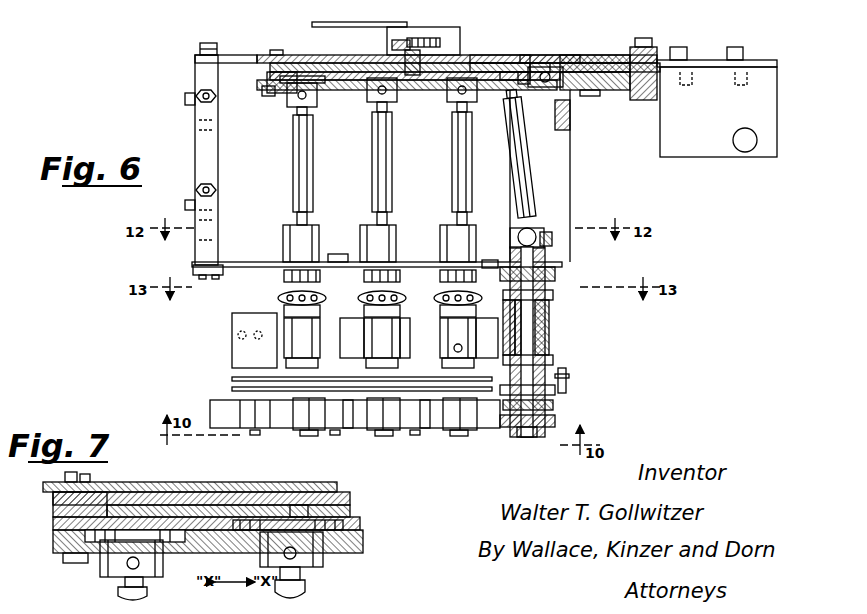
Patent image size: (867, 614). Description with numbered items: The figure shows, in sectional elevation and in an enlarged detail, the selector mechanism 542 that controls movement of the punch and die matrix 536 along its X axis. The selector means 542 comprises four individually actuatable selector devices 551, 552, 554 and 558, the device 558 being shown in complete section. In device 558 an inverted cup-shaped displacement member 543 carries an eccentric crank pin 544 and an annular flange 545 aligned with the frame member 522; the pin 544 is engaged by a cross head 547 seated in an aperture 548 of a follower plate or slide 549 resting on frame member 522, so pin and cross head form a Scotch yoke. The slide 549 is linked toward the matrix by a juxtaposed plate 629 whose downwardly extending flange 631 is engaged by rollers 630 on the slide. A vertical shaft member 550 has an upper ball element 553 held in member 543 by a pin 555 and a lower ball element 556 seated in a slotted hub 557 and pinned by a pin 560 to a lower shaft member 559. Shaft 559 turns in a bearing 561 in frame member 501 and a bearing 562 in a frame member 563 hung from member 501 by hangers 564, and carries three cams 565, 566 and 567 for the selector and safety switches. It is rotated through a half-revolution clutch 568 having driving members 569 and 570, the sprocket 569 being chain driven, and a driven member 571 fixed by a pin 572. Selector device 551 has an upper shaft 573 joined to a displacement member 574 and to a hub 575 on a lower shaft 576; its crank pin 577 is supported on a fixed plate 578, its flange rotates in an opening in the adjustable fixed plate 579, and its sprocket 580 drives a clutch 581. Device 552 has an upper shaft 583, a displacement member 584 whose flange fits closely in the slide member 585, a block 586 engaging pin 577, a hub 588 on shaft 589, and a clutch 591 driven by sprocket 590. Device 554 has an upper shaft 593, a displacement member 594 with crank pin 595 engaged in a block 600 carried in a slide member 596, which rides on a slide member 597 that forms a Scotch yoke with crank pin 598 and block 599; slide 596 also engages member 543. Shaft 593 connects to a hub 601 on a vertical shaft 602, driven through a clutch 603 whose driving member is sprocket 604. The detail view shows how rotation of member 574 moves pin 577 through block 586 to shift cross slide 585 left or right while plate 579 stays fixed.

In FIG. 6, the frame member 501 is at (268, 266).
In FIG. 6, the frame member 522 is at (240, 40).
In FIG. 6, the matrix 536 is at (145, 2).
In FIG. 6, the selector mechanism 542 is at (185, 88).
In FIG. 6, the displacement member 543 is at (538, 64).
In FIG. 6, the eccentric crank pin 544 is at (575, 66).
In FIG. 6, the annular flange 545 is at (526, 57).
In FIG. 6, the cross head 547 is at (565, 57).
In FIG. 6, the aperture 548 is at (578, 76).
In FIG. 6, the follower plate or slide 549 is at (625, 55).
In FIG. 6, the vertical shaft member 550 is at (537, 170).
In FIG. 6, the selector device 551 is at (303, 195).
In FIG. 6, the selector device 552 is at (385, 185).
In FIG. 6, the ball element 553 is at (540, 90).
In FIG. 6, the selector device 554 is at (466, 180).
In FIG. 6, the pin 555 is at (528, 85).
In FIG. 6, the ball element 556 is at (518, 230).
In FIG. 6, the slotted hub 557 is at (518, 238).
In FIG. 6, the selector device 558 is at (560, 137).
In FIG. 6, the shaft member 559 is at (522, 438).
In FIG. 6, the pin 560 is at (545, 238).
In FIG. 6, the bearing 561 is at (552, 280).
In FIG. 6, the bearing 562 is at (552, 395).
In FIG. 6, the frame member 563 is at (570, 388).
In FIG. 6, the hangers 564 is at (340, 256).
In FIG. 6, the cam 565 is at (552, 408).
In FIG. 6, the cam 566 is at (552, 420).
In FIG. 6, the cam 567 is at (545, 438).
In FIG. 6, the clutch 568 is at (550, 340).
In FIG. 6, the driving member 569 is at (553, 305).
In FIG. 6, the driving member 570 is at (549, 325).
In FIG. 6, the driven member 571 is at (552, 362).
In FIG. 6, the pin 572 is at (548, 350).
In FIG. 6, the upper shaft 573 is at (293, 163).
In FIG. 6, the displacement member 574 is at (318, 100).
In FIG. 7, the displacement member 574 is at (150, 570).
In FIG. 6, the hub 575 is at (284, 244).
In FIG. 6, the lower shaft 576 is at (306, 437).
In FIG. 6, the eccentric crank pin 577 is at (306, 66).
In FIG. 7, the eccentric crank pin 577 is at (135, 515).
In FIG. 6, the fixed plate 578 is at (266, 94).
In FIG. 6, the adjustable fixed plate 579 is at (268, 84).
In FIG. 7, the adjustable fixed plate 579 is at (62, 542).
In FIG. 6, the drive sprocket 580 is at (278, 298).
In FIG. 6, the clutch 581 is at (290, 342).
In FIG. 6, the upper shaft 583 is at (393, 155).
In FIG. 6, the displacement member 584 is at (398, 97).
In FIG. 7, the displacement member 584 is at (318, 565).
In FIG. 6, the slide member 585 is at (323, 84).
In FIG. 7, the slide member 585 is at (55, 523).
In FIG. 6, the block 586 is at (286, 58).
In FIG. 7, the block 586 is at (160, 520).
In FIG. 6, the hub 588 is at (392, 240).
In FIG. 6, the shaft 589 is at (378, 437).
In FIG. 6, the sprocket 590 is at (410, 290).
In FIG. 6, the clutch 591 is at (372, 341).
In FIG. 6, the upper shaft 593 is at (452, 180).
In FIG. 6, the displacement member 594 is at (450, 100).
In FIG. 6, the eccentric crank pin 595 is at (480, 57).
In FIG. 6, the slide member 596 is at (515, 82).
In FIG. 6, the slide member 597 is at (350, 74).
In FIG. 7, the slide member 597 is at (355, 512).
In FIG. 6, the crank pin 598 is at (410, 52).
In FIG. 7, the crank pin 598 is at (303, 508).
In FIG. 6, the block 599 is at (380, 82).
In FIG. 6, the block 600 is at (487, 66).
In FIG. 6, the hub 601 is at (442, 247).
In FIG. 6, the vertical shaft 602 is at (440, 437).
In FIG. 6, the clutch 603 is at (456, 338).
In FIG. 6, the sprocket 604 is at (419, 337).
In FIG. 6, the plate 629 is at (358, 22).
In FIG. 6, the rollers 630 is at (405, 29).
In FIG. 6, the flange 631 is at (430, 40).